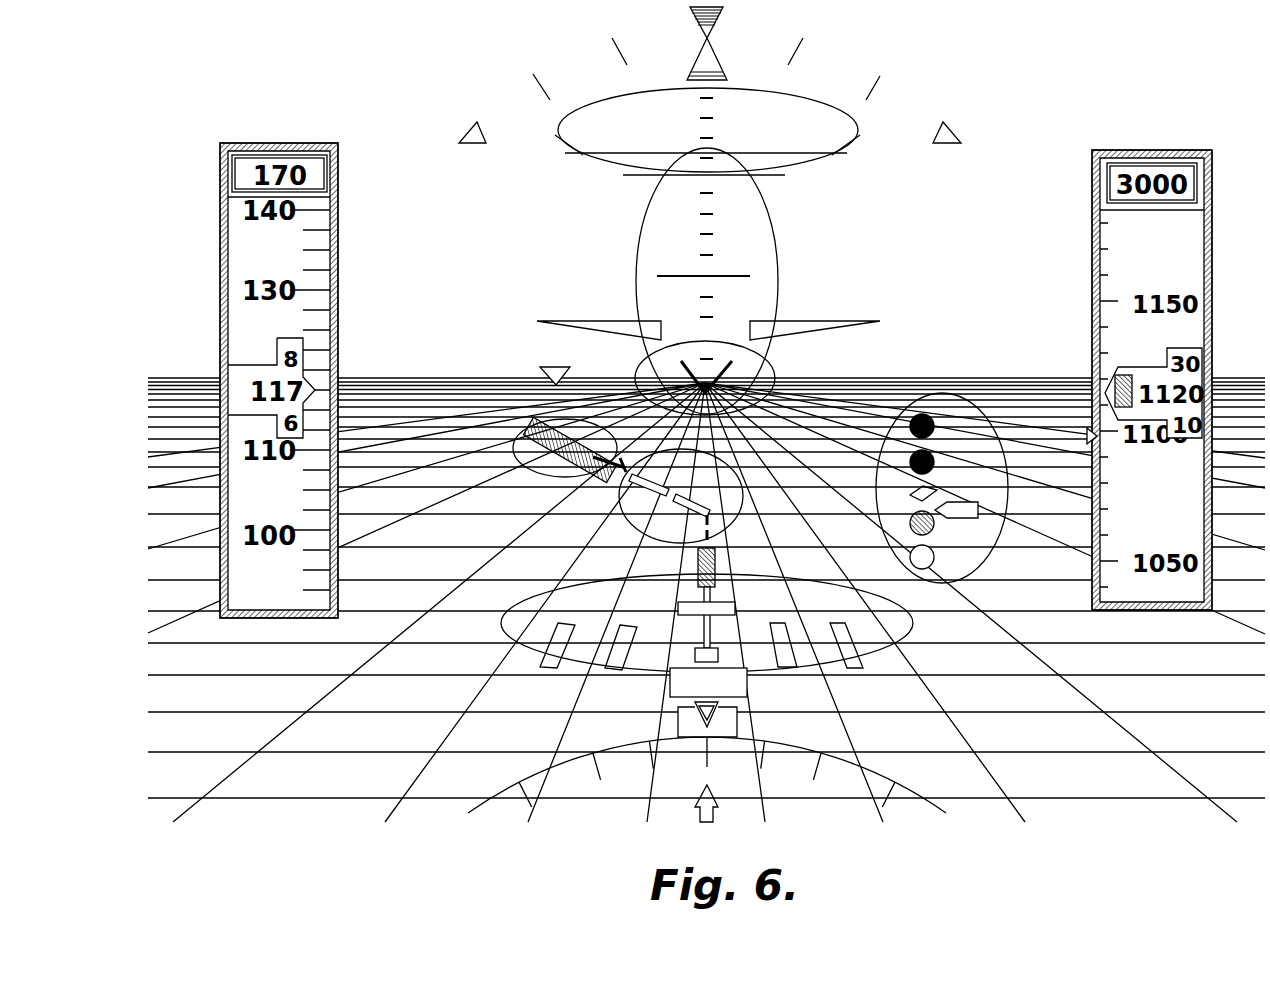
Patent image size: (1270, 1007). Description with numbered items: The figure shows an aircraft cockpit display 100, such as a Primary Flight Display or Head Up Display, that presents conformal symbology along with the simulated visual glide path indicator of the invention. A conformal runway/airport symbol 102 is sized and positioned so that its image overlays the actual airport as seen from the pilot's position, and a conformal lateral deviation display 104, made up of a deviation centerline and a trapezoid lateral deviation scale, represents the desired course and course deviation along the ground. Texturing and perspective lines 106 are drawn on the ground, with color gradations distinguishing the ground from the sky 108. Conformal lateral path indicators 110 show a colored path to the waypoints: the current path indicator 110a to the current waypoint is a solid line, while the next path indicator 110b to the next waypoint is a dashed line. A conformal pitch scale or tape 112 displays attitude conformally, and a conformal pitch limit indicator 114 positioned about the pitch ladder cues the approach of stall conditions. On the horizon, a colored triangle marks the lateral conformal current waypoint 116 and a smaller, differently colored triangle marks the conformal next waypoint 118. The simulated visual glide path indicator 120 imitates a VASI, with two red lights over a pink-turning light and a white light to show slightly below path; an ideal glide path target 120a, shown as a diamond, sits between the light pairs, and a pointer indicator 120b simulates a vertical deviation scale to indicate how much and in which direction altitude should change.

The aircraft cockpit display 100 is at (1138, 76).
The conformal runway/airport symbol 102 is at (513, 444).
The conformal lateral deviation display 104 is at (502, 622).
The texturing and perspective lines 106 is at (488, 382).
The sky 108 is at (1053, 43).
The conformal lateral path indicators 110 is at (706, 506).
The current path indicator 110a is at (740, 527).
The next path indicator 110b is at (620, 497).
The conformal pitch scale or tape 112 is at (778, 252).
The conformal pitch limit indicator 114 is at (824, 103).
The lateral conformal current waypoint 116 is at (777, 370).
The conformal next waypoint 118 is at (543, 367).
The simulated visual glide path indicator 120 is at (973, 428).
The ideal glide path target 120a is at (967, 500).
The pointer indicator 120b is at (1000, 465).